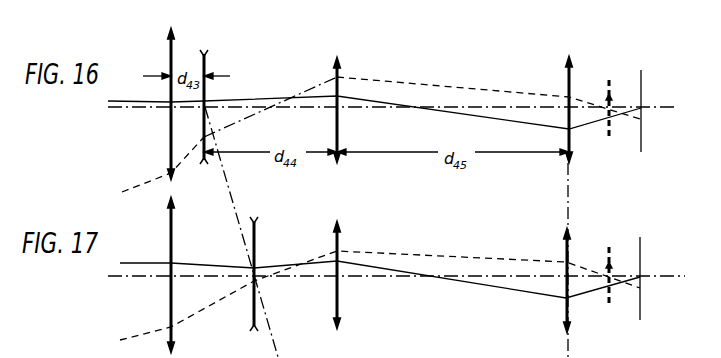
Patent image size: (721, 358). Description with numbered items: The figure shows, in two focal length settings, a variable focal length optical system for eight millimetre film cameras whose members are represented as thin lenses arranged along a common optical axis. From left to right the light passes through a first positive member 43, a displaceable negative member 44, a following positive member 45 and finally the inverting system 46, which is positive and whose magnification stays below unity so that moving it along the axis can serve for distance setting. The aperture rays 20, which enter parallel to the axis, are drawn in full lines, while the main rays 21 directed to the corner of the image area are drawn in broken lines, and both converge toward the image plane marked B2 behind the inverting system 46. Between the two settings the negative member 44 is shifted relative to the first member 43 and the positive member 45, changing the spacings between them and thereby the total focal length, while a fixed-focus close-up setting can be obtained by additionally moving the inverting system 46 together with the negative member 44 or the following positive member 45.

In FIG. 16, the aperture rays 20 is at (257, 100).
In FIG. 16, the main rays 21 is at (242, 118).
In FIG. 16, the first positive member 43 is at (168, 42).
In FIG. 17, the first positive member 43 is at (168, 208).
In FIG. 16, the displaceable negative member 44 is at (207, 60).
In FIG. 17, the displaceable negative member 44 is at (252, 226).
In FIG. 16, the positive member following the negative member 45 is at (340, 62).
In FIG. 17, the positive member following the negative member 45 is at (340, 229).
In FIG. 16, the inverting system 46 is at (566, 68).
In FIG. 17, the inverting system 46 is at (564, 237).
In FIG. 16, the image plane B2 is at (643, 87).
In FIG. 17, the image plane B2 is at (642, 251).